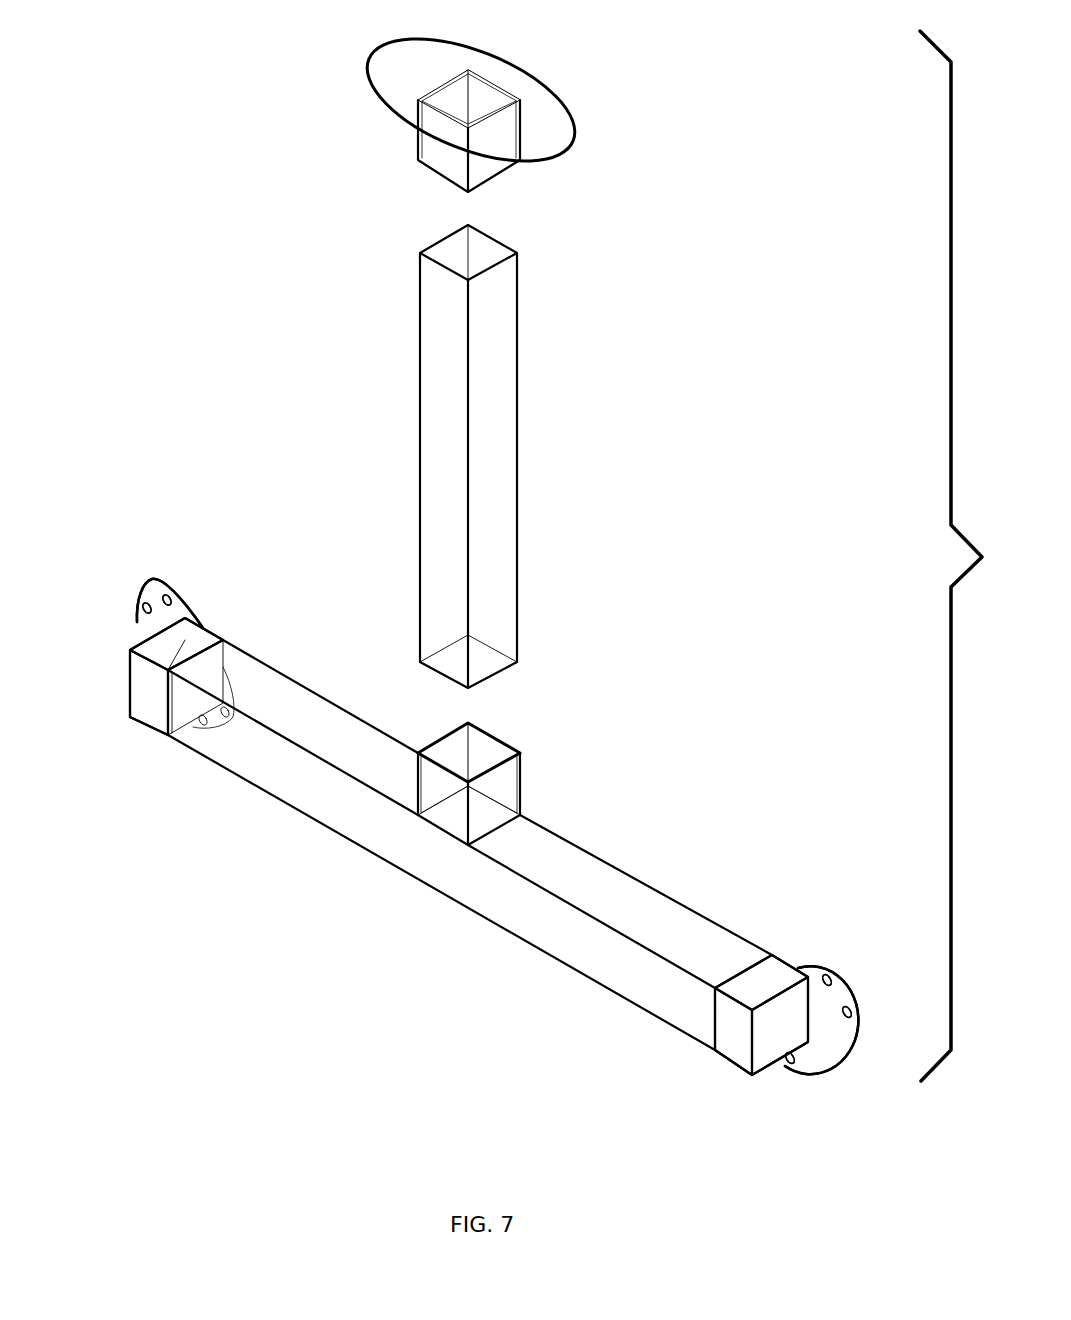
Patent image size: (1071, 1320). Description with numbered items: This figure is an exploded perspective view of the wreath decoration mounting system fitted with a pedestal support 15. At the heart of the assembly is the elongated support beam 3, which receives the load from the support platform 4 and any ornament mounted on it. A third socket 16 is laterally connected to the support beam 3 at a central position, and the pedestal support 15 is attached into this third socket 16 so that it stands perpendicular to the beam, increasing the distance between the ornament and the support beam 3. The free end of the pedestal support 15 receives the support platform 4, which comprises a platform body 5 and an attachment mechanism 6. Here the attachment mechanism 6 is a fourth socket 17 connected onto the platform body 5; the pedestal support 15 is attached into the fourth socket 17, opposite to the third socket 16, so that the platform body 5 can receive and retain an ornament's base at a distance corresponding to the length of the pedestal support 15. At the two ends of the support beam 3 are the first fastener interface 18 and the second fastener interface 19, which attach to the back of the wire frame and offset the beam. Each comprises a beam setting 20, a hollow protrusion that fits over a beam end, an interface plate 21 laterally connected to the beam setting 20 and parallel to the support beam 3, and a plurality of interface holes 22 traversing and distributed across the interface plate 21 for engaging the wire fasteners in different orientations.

The support beam 3 is at (702, 928).
The support platform 4 is at (604, 84).
The platform body 5 is at (382, 62).
The attachment mechanism 6 is at (445, 168).
The fourth socket 17 is at (434, 150).
The pedestal support 15 is at (432, 494).
The third socket 16 is at (490, 752).
The first fastener interface 18 is at (132, 560).
The second fastener interface 19 is at (823, 1125).
The beam setting 20 is at (153, 722).
The interface plate 21 is at (140, 622).
The plurality of interface holes 22 is at (170, 590).